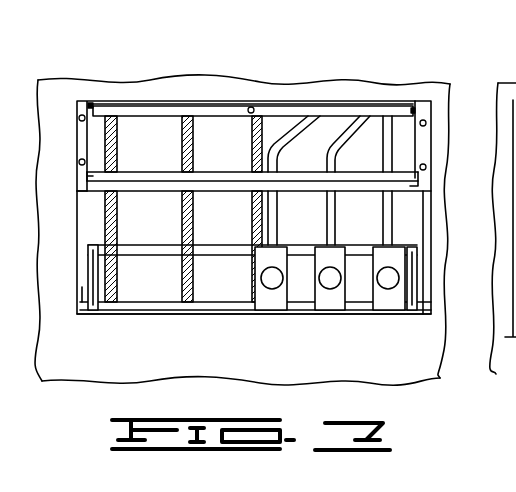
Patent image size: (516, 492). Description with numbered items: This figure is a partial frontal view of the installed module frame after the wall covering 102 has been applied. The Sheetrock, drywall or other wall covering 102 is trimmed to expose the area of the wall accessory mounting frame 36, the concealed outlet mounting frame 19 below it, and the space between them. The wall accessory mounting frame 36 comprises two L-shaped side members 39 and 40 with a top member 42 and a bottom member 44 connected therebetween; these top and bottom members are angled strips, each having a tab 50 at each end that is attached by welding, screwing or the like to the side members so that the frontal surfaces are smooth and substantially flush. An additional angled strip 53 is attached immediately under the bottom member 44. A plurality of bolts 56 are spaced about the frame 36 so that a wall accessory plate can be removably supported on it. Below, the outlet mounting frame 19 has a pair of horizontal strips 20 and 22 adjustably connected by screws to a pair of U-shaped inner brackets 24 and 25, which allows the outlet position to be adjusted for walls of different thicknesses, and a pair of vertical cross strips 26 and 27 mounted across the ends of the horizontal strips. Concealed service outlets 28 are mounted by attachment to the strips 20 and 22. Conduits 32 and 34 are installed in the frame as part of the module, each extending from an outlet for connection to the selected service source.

The outlet mounting frame 19 is at (160, 313).
The strip 20 is at (122, 247).
The strip 22 is at (208, 303).
The U-shaped inner bracket 24 is at (82, 305).
The U-shaped inner bracket 25 is at (423, 267).
The vertical cross strip 26 is at (98, 306).
The vertical cross strip 27 is at (415, 290).
The concealed service outlet 28 is at (330, 306).
The conduit 32 is at (113, 145).
The conduit 34 is at (287, 143).
The wall accessory mounting frame 36 is at (333, 100).
The L-shaped side member 39 is at (77, 101).
The L-shaped side member 40 is at (423, 115).
The top member 42 is at (211, 108).
The bottom member 44 is at (197, 176).
The tab 50 is at (90, 106).
The additional angled strip 53 is at (198, 186).
The bolt 56 is at (253, 108).
The wall covering 102 is at (118, 88).